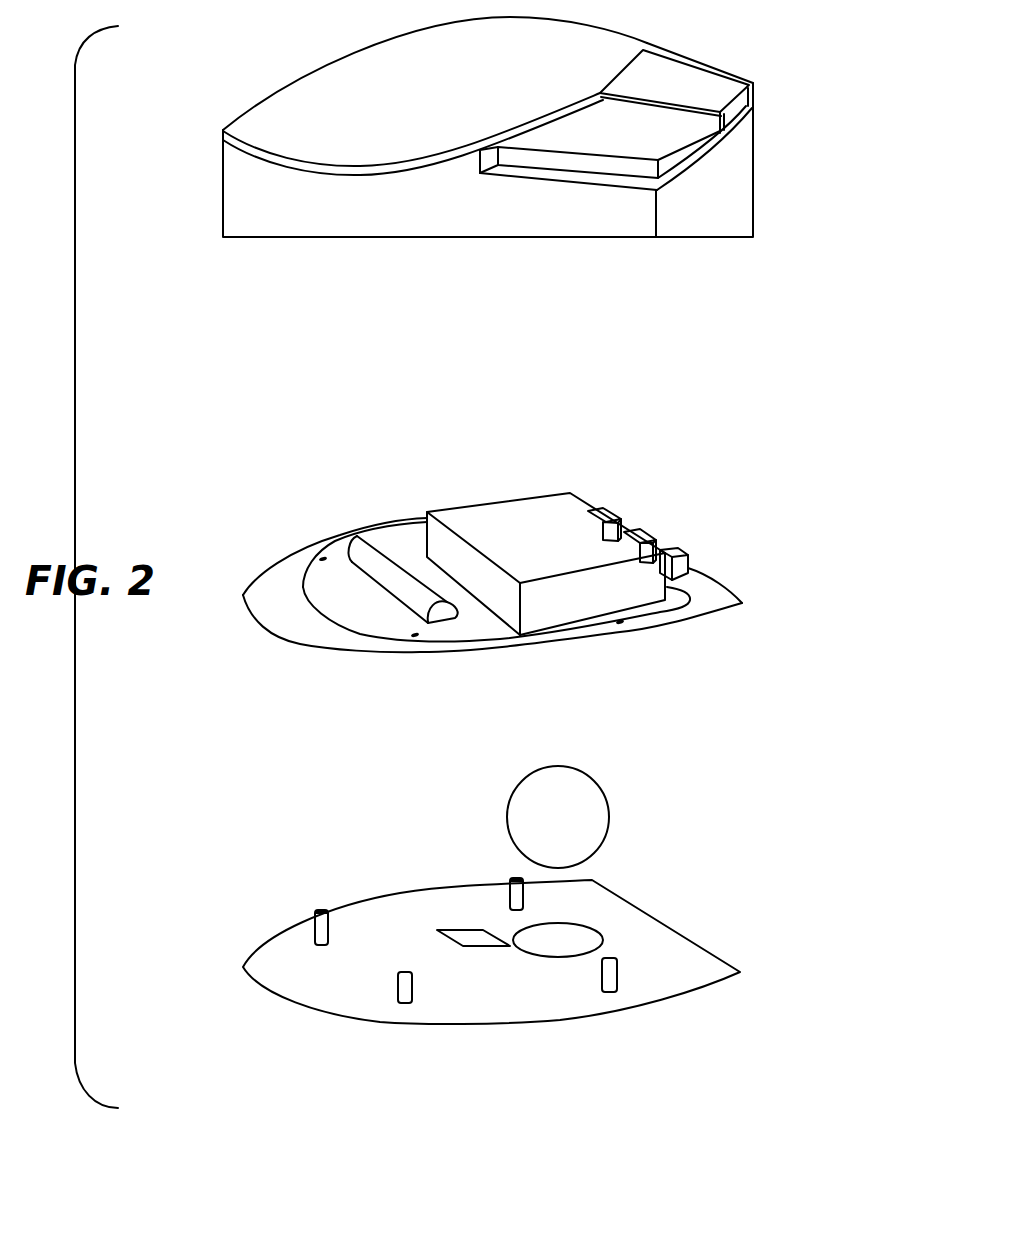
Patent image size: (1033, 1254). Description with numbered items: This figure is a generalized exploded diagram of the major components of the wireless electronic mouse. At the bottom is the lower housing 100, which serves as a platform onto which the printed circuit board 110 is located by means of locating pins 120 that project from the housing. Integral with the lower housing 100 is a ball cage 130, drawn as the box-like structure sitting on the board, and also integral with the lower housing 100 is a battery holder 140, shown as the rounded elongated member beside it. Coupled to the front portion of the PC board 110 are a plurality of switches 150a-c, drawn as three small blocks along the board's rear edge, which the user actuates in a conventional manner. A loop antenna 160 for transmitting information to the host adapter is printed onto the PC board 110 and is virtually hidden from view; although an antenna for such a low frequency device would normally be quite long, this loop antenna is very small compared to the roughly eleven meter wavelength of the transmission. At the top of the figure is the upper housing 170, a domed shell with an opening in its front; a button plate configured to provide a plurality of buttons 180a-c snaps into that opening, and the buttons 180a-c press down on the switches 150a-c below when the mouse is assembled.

The lower housing 100 is at (697, 943).
The printed circuit board 110 is at (722, 587).
The locating pins 120 is at (323, 928).
The ball cage 130 is at (450, 507).
The battery holder 140 is at (366, 552).
The switches 150a-c is at (617, 517).
The loop antenna 160 is at (303, 587).
The upper housing 170 is at (625, 237).
The buttons 180a-c is at (695, 147).